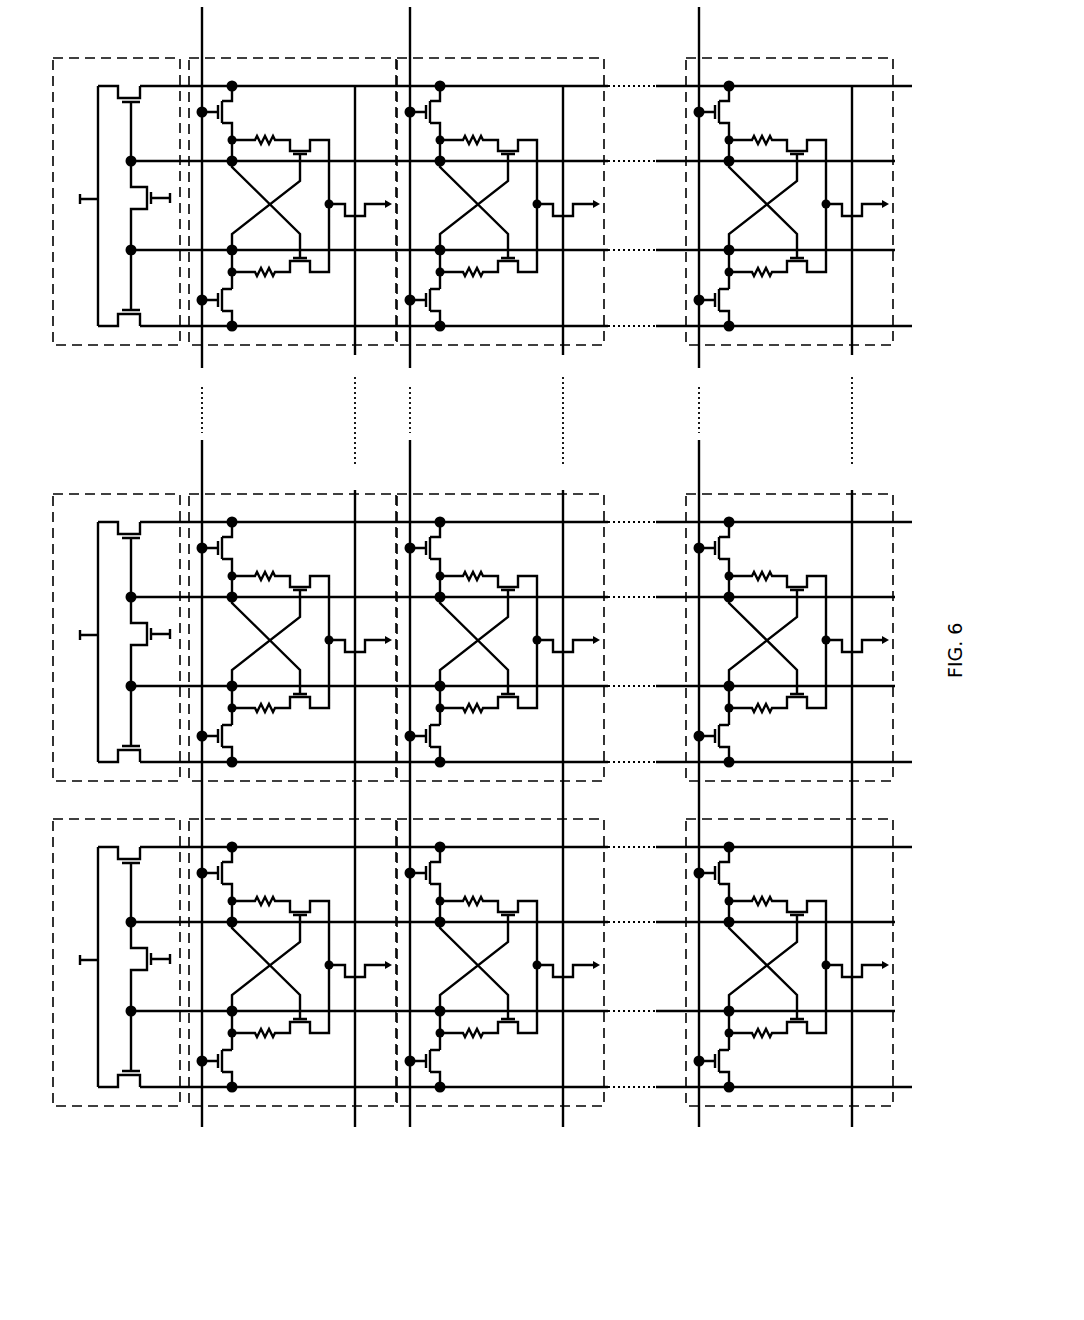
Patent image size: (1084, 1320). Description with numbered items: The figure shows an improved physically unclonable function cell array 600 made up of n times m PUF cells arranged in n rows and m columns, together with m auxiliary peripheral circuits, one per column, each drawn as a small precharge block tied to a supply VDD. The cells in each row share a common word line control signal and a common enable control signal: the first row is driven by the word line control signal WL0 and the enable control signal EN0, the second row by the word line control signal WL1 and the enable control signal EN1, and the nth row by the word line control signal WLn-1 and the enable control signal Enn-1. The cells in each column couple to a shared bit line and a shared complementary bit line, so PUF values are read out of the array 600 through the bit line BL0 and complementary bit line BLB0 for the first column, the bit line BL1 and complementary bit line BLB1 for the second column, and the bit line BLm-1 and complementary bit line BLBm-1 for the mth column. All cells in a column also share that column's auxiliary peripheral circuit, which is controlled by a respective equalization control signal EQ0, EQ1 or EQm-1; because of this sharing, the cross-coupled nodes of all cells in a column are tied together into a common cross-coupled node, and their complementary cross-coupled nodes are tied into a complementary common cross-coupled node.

The PUF cell array 600 is at (113, 1137).
The equalization control signal EQ0 is at (154, 966).
The equalization control signal EQ1 is at (154, 641).
The equalization control signal EQm-1 is at (154, 205).
The supply voltage VDD is at (79, 967).
The word line control signal WL0 is at (203, 593).
The word line control signal WL1 is at (411, 593).
The word line control signal WLn-1 is at (703, 598).
The enable control signal EN0 is at (358, 632).
The enable control signal EN1 is at (565, 632).
The enable control signal Enn-1 is at (855, 635).
The bit line BL0 is at (534, 1064).
The bit line BL1 is at (534, 739).
The bit line BLm-1 is at (534, 290).
The complementary bit line BLB0 is at (534, 872).
The complementary bit line BLB1 is at (534, 547).
The complementary bit line BLBm-1 is at (534, 124).